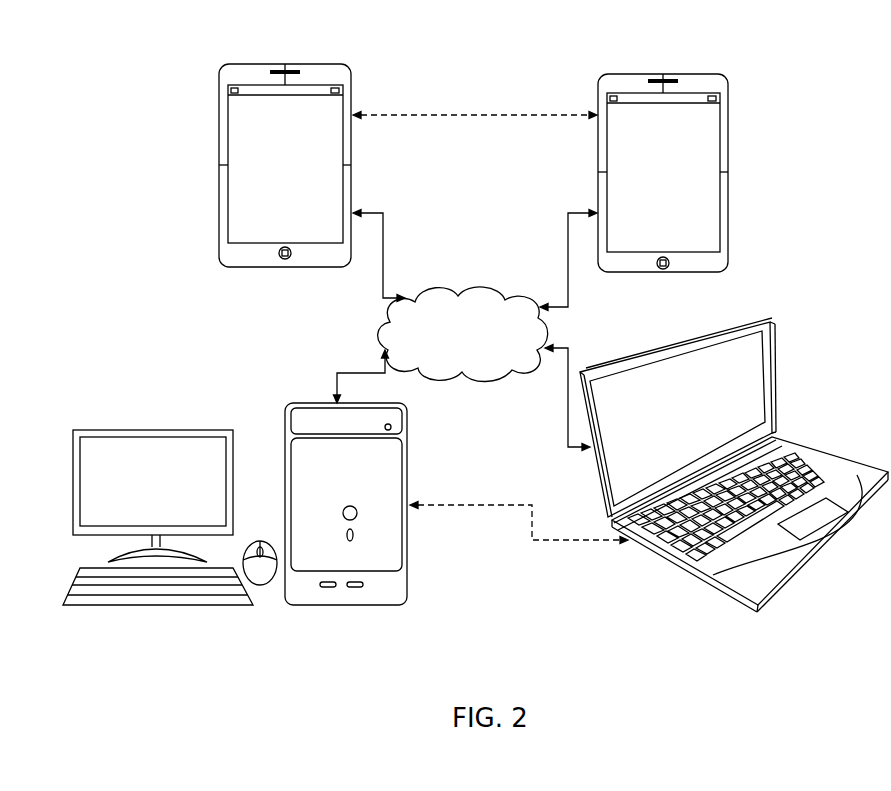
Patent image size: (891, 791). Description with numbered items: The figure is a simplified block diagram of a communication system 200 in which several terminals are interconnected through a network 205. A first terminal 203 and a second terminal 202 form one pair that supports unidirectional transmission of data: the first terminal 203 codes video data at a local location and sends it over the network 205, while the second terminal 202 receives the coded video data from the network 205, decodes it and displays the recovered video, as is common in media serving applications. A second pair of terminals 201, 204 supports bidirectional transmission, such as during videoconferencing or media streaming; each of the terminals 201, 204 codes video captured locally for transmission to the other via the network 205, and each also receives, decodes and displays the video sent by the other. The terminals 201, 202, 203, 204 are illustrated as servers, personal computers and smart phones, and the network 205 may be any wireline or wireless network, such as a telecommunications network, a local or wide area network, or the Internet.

The communication system 200 is at (95, 49).
The terminal 201 is at (218, 153).
The second terminal 202 is at (408, 575).
The first terminal 203 is at (593, 465).
The terminal 204 is at (595, 145).
The network 205 is at (468, 288).